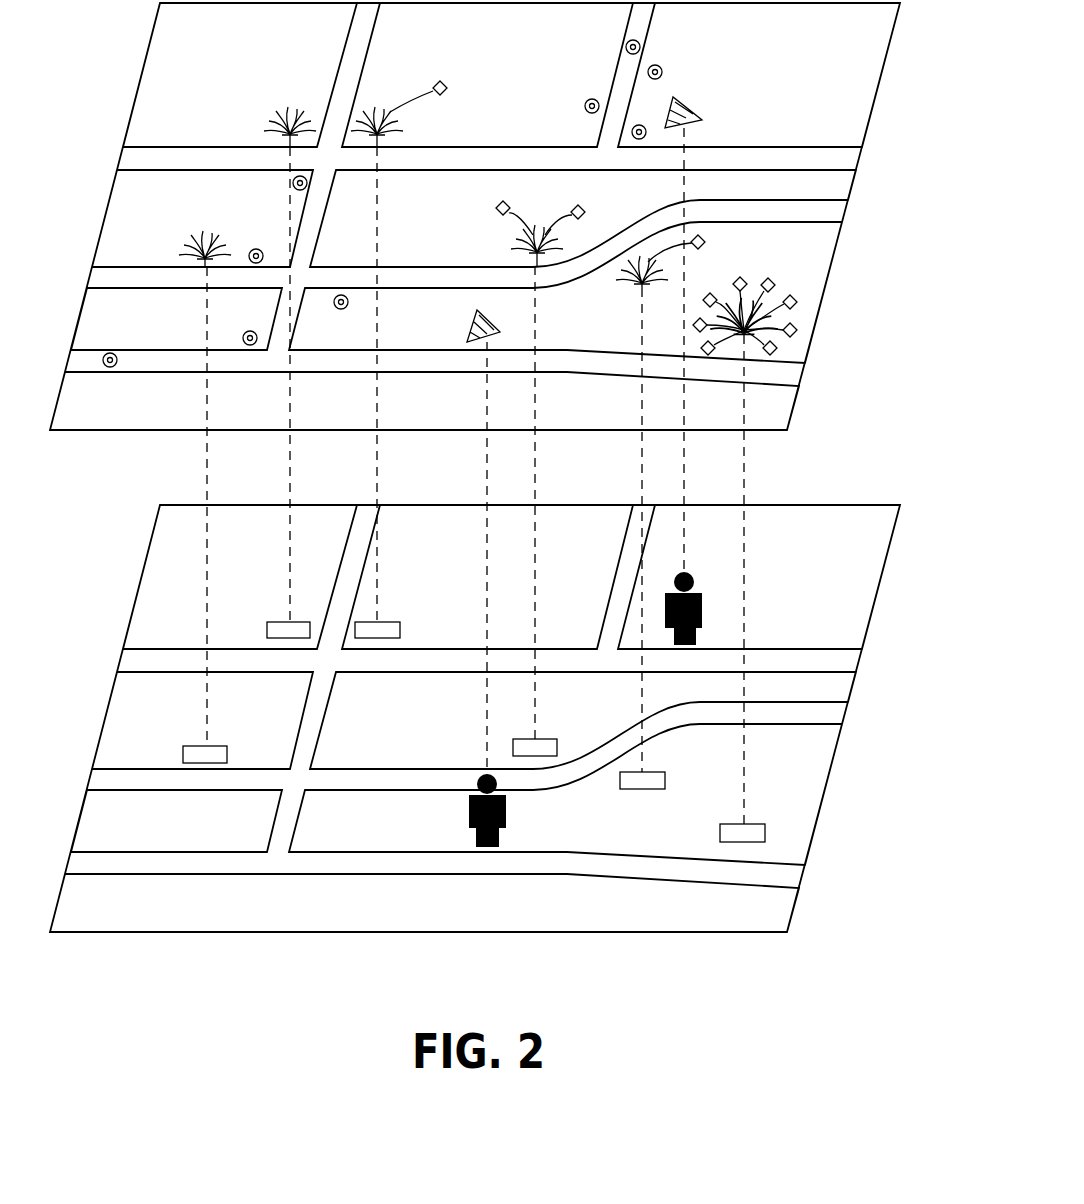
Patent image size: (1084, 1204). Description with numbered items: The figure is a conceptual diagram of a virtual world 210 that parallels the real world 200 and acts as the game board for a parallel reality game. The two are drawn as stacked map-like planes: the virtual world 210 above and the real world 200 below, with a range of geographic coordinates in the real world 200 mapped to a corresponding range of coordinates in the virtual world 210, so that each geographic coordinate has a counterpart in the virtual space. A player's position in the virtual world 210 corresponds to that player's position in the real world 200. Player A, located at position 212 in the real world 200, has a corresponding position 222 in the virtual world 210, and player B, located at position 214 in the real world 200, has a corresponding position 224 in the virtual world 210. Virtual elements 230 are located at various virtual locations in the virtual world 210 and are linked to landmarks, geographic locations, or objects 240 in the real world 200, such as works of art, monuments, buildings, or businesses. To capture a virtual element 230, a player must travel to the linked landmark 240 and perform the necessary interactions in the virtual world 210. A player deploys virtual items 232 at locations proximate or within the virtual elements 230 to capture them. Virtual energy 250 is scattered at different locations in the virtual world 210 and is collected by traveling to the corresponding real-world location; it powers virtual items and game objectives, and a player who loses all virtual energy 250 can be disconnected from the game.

The real world 200 is at (880, 590).
The virtual world 210 is at (868, 123).
The position of player A in the real world 212 is at (468, 818).
The position of player B in the real world 214 is at (702, 600).
The corresponding position of player A in the virtual world 222 is at (500, 338).
The corresponding position of player B in the virtual world 224 is at (700, 118).
The virtual elements 230 is at (293, 110).
The virtual items 232 is at (448, 86).
The real-world landmarks or objects 240 is at (280, 619).
The virtual energy 250 is at (664, 70).